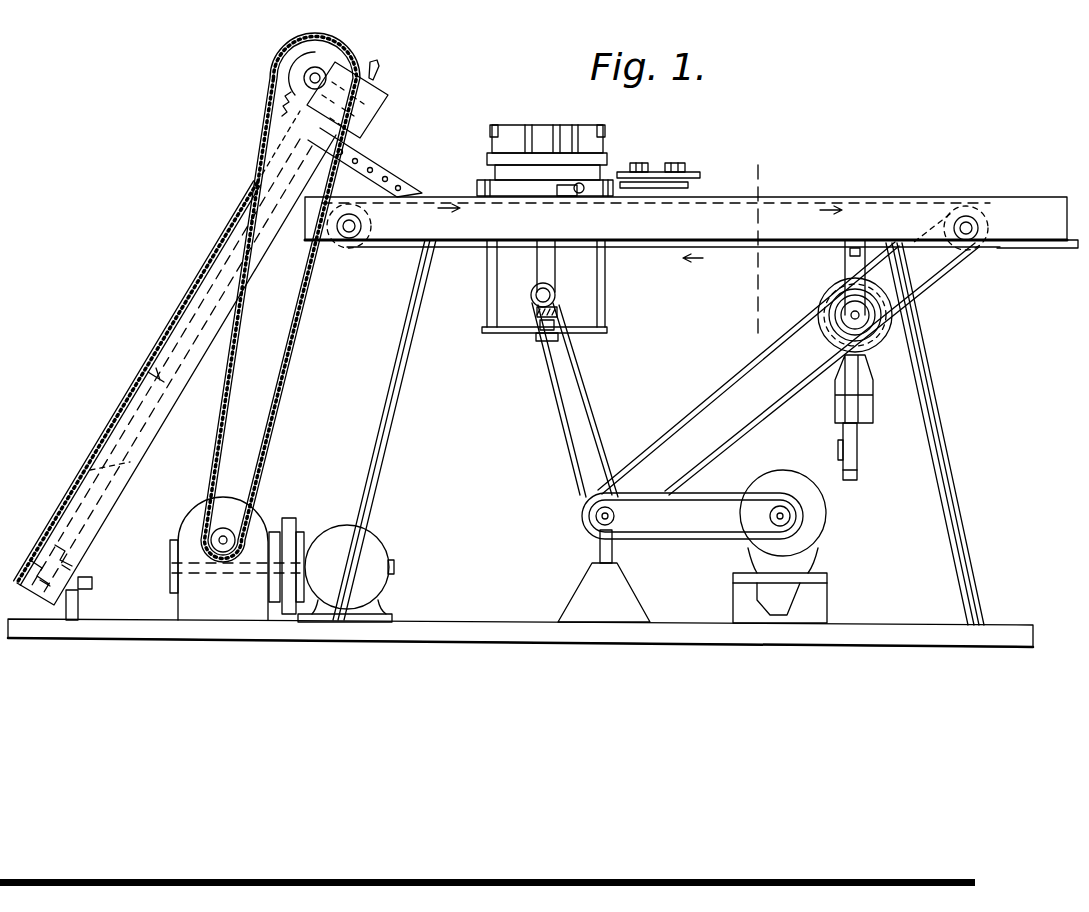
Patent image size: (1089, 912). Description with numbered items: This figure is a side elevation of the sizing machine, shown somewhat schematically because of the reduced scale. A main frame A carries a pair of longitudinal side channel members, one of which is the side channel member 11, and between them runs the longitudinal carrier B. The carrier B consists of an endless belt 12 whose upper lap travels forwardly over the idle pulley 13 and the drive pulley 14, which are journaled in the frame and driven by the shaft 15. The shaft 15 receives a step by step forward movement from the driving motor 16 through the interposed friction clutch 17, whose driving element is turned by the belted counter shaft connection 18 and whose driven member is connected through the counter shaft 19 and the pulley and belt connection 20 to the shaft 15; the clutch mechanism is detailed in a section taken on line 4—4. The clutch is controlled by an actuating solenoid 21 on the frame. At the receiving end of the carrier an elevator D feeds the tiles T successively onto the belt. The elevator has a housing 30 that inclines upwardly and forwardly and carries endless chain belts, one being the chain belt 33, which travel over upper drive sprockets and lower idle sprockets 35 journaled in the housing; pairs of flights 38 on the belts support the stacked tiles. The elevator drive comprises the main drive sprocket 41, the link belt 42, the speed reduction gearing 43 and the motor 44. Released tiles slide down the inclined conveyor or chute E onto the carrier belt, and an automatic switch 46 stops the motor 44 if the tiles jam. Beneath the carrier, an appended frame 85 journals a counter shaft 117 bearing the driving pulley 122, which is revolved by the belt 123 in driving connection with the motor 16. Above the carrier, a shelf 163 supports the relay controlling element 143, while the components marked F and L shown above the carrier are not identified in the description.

The section line 4— 4 is at (730, 356).
The side channel member 11 is at (935, 208).
The endless belt 12 is at (408, 248).
The idle pulley 13 is at (352, 240).
The drive pulley 14 is at (962, 250).
The shaft 15 is at (968, 227).
The driving motor 16 is at (817, 530).
The friction clutch 17 is at (827, 296).
The belted counter shaft connection 18 is at (590, 528).
The counter shaft 19 is at (853, 317).
The pulley and belt connection 20 is at (938, 280).
The actuating solenoid 21 is at (863, 410).
The housing 30 is at (118, 428).
The endless chain belt 33 is at (105, 476).
The lower idle sprockets 35 is at (35, 548).
The flights 38 is at (158, 373).
The main drive sprocket 41 is at (290, 70).
The link belt 42 is at (290, 366).
The speed reduction gearing 43 is at (262, 506).
The motor 44 is at (377, 542).
The automatic switch 46 is at (378, 76).
The appended frame 85 is at (487, 300).
The counter shaft 117 is at (537, 305).
The driving pulley 122 is at (552, 297).
The belt 123 is at (620, 393).
The relay controlling element 143 is at (680, 180).
The shelf 163 is at (695, 176).
The main frame A is at (410, 363).
The carrier B is at (863, 200).
The elevator D is at (145, 452).
The inclined conveyor or chute E is at (364, 166).
The feed box F is at (545, 137).
The lower box L is at (602, 142).
The tiles T is at (193, 285).